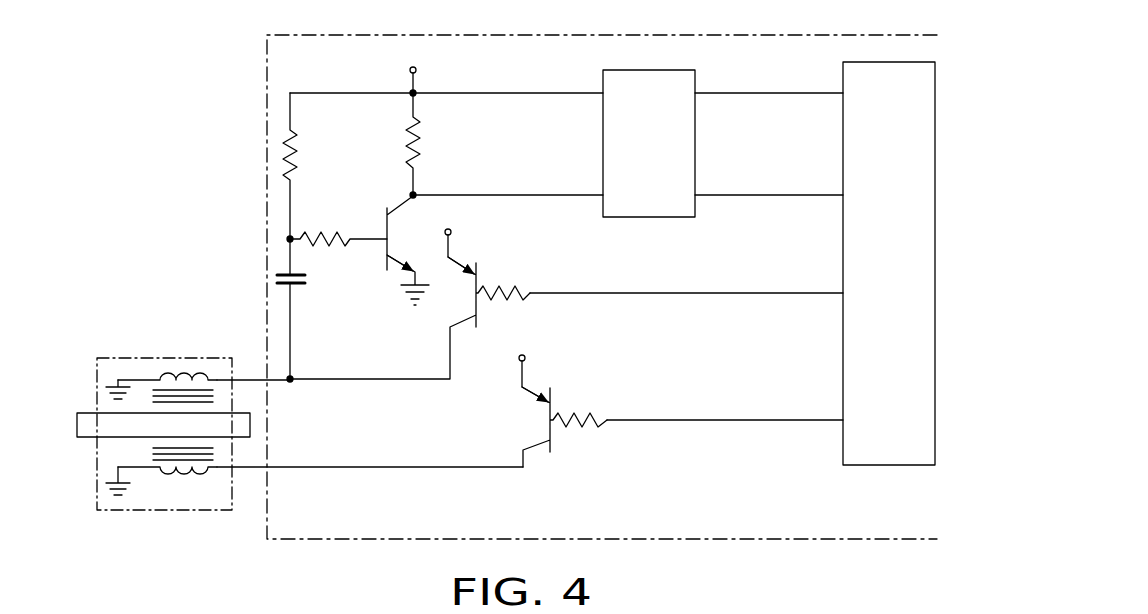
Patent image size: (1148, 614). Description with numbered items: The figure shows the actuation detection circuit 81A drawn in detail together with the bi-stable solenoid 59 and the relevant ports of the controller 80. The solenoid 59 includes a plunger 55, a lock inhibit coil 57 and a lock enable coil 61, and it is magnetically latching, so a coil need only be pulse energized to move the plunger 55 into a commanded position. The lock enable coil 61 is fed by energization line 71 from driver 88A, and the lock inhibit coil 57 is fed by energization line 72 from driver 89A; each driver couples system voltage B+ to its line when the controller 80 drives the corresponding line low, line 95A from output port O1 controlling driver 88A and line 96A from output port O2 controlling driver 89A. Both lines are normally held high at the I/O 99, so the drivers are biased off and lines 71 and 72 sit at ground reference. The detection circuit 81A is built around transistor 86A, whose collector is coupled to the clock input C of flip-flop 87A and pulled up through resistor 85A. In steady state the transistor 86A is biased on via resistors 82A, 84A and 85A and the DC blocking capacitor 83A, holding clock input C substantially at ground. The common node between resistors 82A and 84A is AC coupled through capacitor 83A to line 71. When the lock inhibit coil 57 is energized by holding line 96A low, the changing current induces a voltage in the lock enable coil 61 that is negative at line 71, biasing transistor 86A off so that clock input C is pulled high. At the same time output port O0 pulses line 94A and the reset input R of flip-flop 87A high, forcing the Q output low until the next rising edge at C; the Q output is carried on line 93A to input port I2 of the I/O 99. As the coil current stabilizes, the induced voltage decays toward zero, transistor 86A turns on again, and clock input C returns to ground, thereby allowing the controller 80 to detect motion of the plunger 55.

The plunger 55 is at (86, 420).
The lock inhibit coil 57 is at (180, 478).
The bi-stable solenoid 59 is at (139, 352).
The lock enable coil 61 is at (188, 371).
The energization line 71 is at (260, 380).
The energization line 72 is at (380, 468).
The controller 80 is at (737, 541).
The actuation detection circuit 81A is at (460, 66).
The resistor 82A is at (285, 160).
The DC blocking capacitor 83A is at (282, 275).
The resistor 84A is at (327, 235).
The resistor 85A is at (417, 160).
The transistor 86A is at (412, 378).
The flip-flop 87A is at (656, 68).
The driver 88A is at (524, 269).
The driver 89A is at (565, 454).
The line 93A is at (785, 92).
The line 94A is at (790, 194).
The line 95A is at (790, 292).
The line 96A is at (670, 422).
The I/O 99 is at (876, 468).